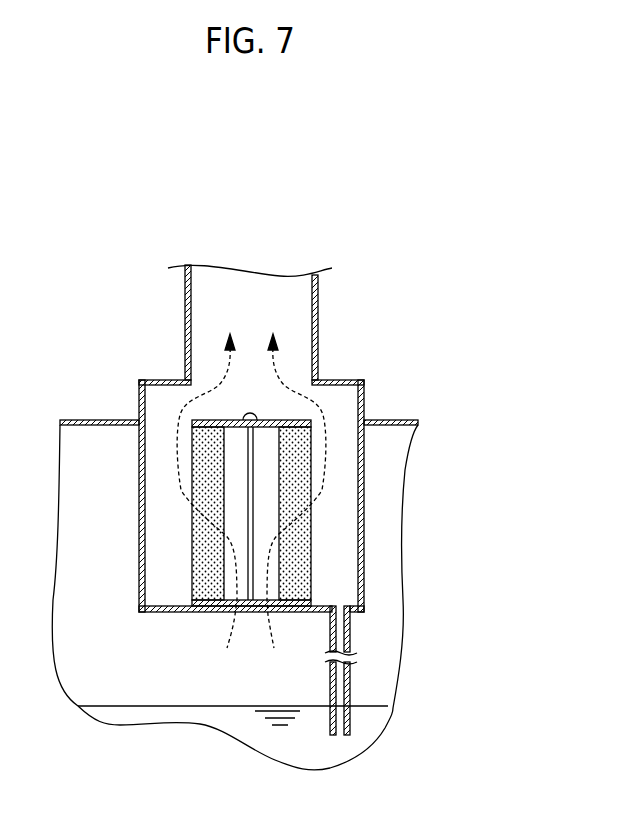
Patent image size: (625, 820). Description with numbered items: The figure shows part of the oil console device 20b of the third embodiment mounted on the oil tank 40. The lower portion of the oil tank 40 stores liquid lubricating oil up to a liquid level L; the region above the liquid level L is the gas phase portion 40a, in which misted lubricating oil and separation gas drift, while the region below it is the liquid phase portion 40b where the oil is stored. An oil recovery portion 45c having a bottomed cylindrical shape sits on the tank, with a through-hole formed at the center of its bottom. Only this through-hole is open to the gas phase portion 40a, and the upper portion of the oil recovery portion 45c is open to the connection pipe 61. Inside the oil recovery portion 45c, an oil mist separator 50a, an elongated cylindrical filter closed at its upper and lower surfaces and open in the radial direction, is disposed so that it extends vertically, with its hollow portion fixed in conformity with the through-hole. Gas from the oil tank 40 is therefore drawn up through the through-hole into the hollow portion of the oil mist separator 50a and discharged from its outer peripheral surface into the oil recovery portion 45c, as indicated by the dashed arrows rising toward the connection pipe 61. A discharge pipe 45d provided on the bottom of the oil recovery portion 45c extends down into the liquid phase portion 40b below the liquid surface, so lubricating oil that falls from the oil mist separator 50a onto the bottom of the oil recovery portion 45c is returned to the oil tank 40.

The oil console device 20b is at (392, 302).
The connection pipe 61 is at (318, 363).
The oil recovery portion 45c is at (361, 390).
The oil mist separator 50a is at (298, 460).
The gas phase portion 40a is at (390, 515).
The oil tank 40 is at (98, 420).
The discharge pipe 45d is at (351, 630).
The liquid level L is at (375, 705).
The liquid phase portion 40b is at (375, 725).